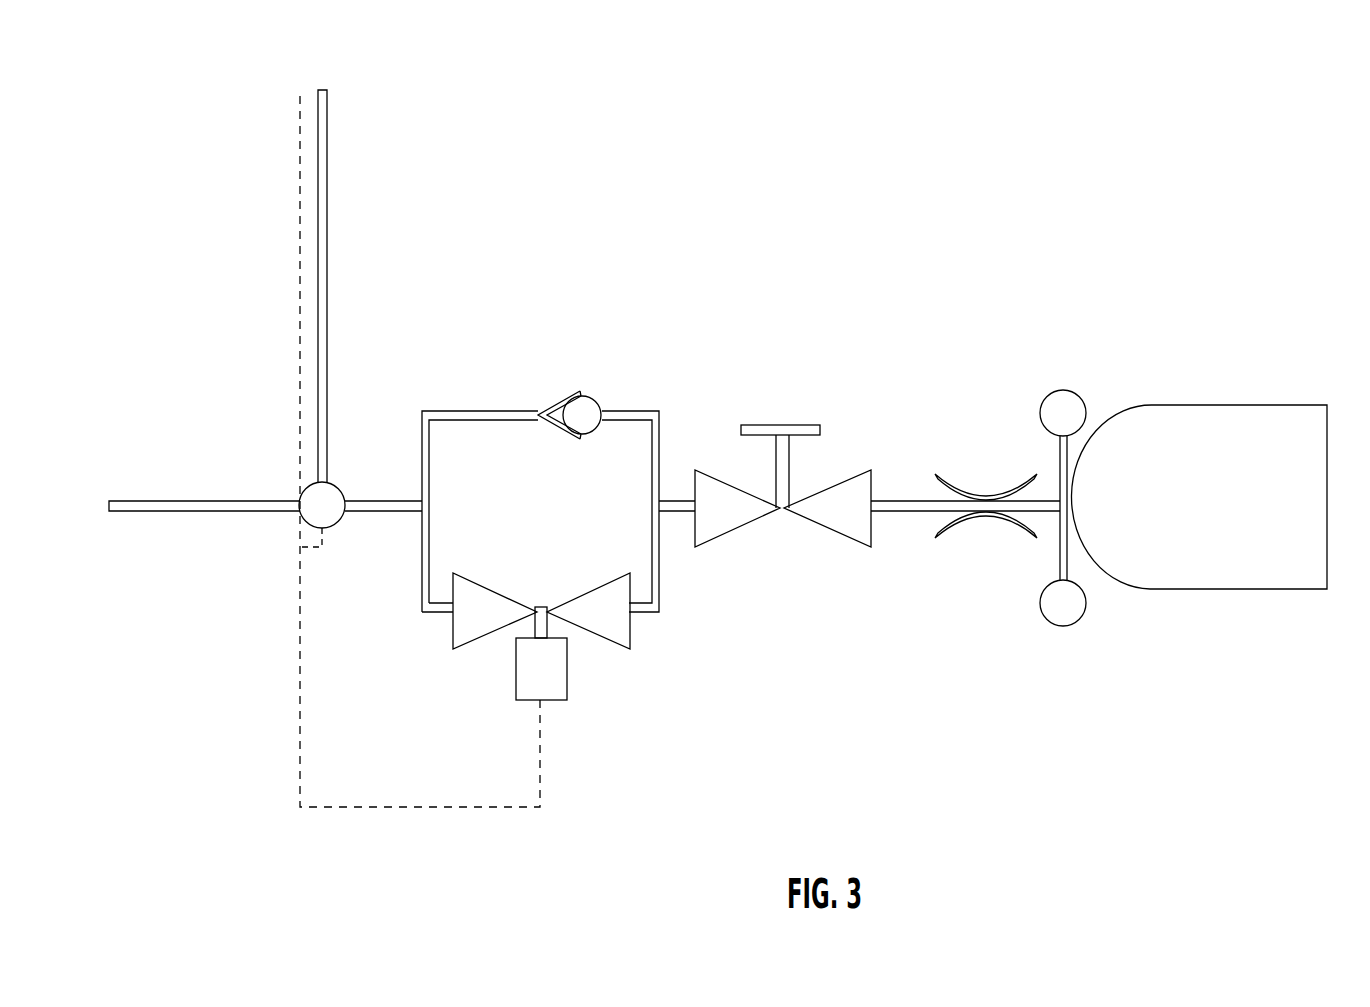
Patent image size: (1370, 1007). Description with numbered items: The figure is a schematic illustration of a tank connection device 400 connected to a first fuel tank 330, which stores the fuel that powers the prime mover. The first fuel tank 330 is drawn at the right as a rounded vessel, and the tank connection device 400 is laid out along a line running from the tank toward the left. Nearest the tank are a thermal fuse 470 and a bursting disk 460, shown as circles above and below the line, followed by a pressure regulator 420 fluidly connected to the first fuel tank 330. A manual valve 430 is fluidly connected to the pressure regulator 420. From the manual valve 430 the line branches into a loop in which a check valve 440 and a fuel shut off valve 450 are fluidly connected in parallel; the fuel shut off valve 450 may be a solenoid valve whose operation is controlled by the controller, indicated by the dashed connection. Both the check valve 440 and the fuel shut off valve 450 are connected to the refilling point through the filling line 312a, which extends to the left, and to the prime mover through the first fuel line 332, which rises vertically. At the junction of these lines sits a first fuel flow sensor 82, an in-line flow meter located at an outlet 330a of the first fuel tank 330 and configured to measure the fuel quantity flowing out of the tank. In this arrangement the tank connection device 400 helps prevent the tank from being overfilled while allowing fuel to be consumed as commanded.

The tank connection device 400 is at (884, 299).
The first fuel line 332 is at (318, 268).
The first fuel flow sensor 82 is at (337, 489).
The filling line 312a is at (226, 512).
The outlet 330a is at (363, 512).
The check valve 440 is at (554, 397).
The fuel shut off valve 450 is at (574, 676).
The manual valve 430 is at (797, 556).
The pressure regulator 420 is at (1003, 547).
The thermal fuse 470 is at (1037, 397).
The bursting disk 460 is at (1055, 631).
The first fuel tank 330 is at (1168, 595).